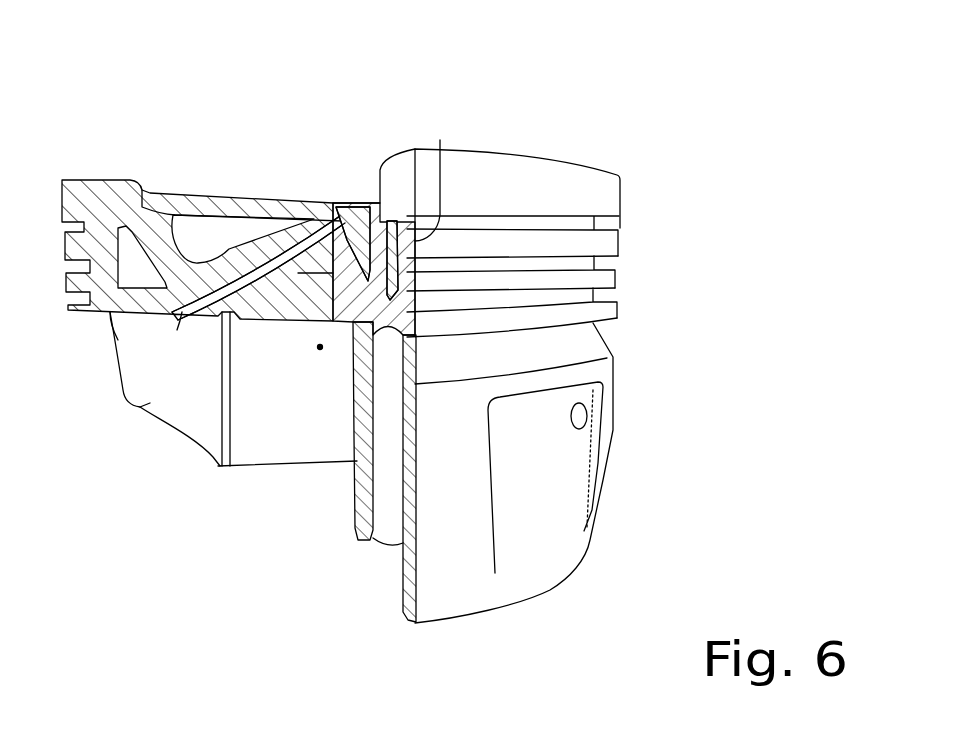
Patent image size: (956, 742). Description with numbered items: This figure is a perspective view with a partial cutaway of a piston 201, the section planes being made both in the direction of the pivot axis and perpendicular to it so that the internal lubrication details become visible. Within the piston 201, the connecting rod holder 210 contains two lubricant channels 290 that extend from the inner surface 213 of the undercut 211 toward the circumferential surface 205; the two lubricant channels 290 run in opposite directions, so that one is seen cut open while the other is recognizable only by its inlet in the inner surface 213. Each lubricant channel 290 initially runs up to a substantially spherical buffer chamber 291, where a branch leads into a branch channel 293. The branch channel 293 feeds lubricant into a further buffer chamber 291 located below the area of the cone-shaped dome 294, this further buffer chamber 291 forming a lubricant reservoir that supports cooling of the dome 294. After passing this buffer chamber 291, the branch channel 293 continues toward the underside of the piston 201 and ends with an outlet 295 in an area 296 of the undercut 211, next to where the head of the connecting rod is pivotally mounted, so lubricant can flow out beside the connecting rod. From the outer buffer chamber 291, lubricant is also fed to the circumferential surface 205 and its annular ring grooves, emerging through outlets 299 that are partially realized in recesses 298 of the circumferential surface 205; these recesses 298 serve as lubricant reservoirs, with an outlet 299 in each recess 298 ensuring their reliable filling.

The piston 201 is at (131, 133).
The circumferential surface 205 is at (605, 423).
The connecting rod holder 210 is at (357, 528).
The undercut 211 is at (272, 497).
The inner surface 213 is at (253, 380).
The lubricant channel 290 is at (320, 350).
The buffer chamber 291 is at (342, 212).
The branch channel 293 is at (246, 211).
The cone-shaped dome 294 is at (317, 218).
The outlet 295 is at (182, 312).
The area of the undercut 296 is at (140, 312).
The recess 298 is at (570, 447).
The outlet 299 is at (590, 412).